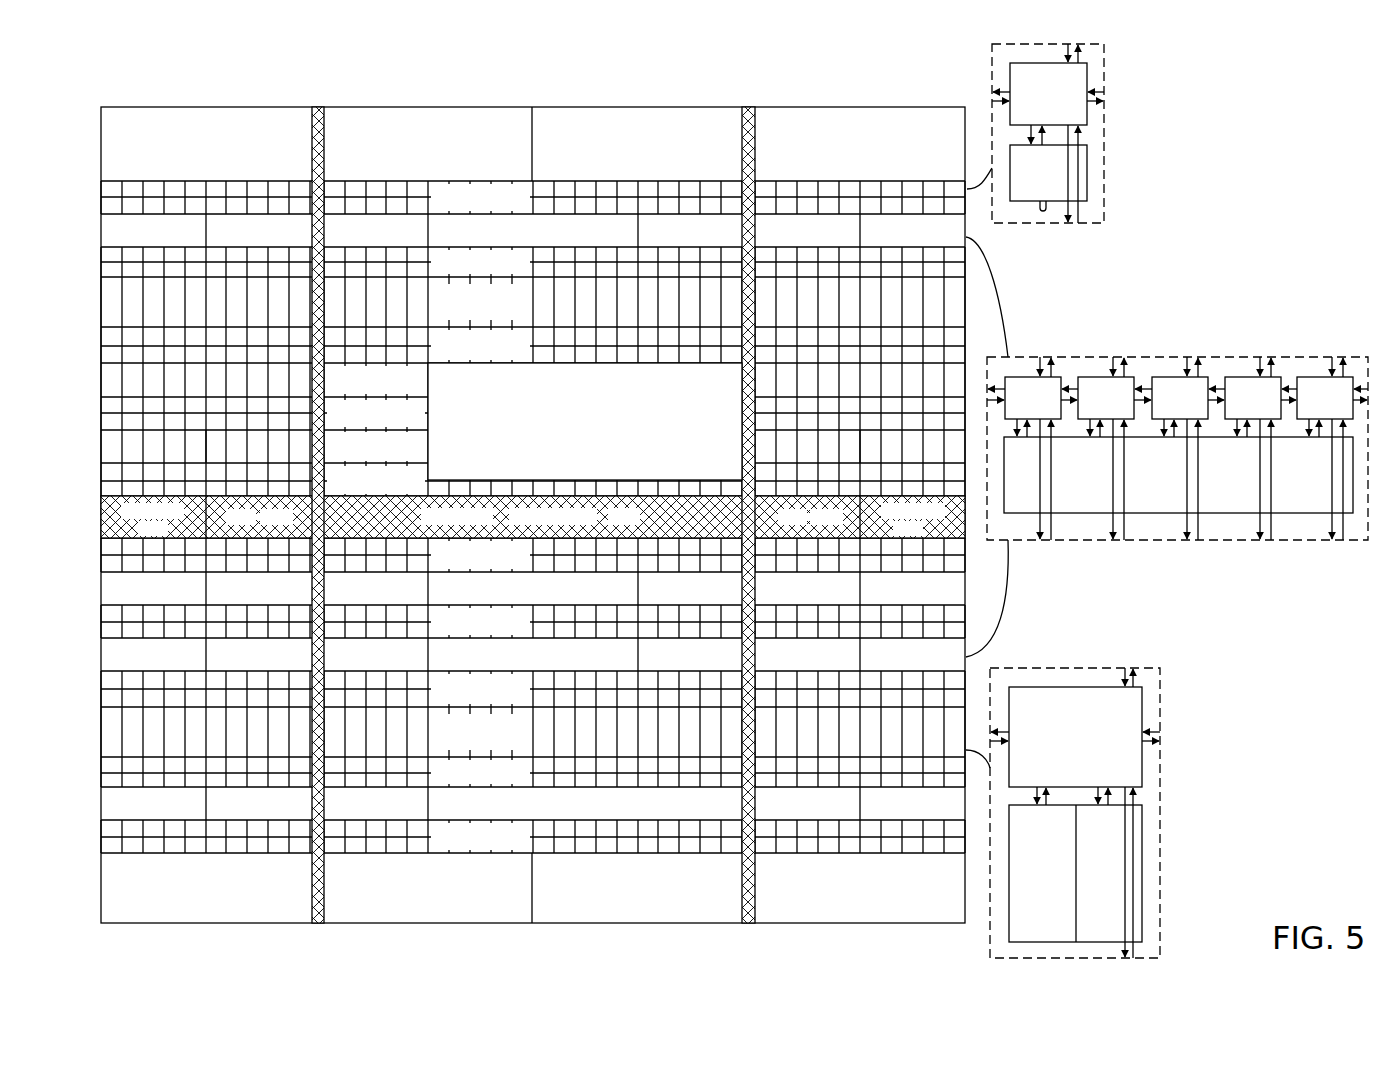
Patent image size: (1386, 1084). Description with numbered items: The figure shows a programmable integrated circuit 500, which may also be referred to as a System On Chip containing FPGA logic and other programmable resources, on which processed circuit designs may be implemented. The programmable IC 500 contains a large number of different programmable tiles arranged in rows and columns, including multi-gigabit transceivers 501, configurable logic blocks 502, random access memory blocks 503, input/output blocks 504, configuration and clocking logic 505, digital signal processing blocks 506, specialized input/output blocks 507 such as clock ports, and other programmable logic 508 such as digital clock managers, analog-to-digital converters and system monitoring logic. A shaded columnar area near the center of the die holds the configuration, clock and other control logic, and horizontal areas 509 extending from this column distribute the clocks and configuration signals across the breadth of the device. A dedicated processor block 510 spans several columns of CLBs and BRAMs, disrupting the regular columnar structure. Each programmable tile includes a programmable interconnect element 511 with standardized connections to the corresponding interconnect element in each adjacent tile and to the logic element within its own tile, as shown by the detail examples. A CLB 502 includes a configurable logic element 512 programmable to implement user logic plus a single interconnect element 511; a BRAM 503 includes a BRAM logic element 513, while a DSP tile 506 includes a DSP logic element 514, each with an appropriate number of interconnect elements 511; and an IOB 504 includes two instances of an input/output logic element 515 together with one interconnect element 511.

The programmable integrated circuit 500 is at (1280, 88).
The multi-gigabit transceivers 501 is at (456, 515).
The configurable logic blocks 502 is at (1104, 163).
The random access memory blocks 503 is at (1298, 357).
The input/output blocks 504 is at (1160, 840).
The configuration and clocking logic 505 is at (533, 517).
The digital signal processing blocks 506 is at (901, 470).
The specialized input/output blocks 507 is at (536, 516).
The other programmable logic 508 is at (533, 519).
The horizontal areas 509 is at (318, 107).
The dedicated processor block 510 is at (585, 421).
The programmable interconnect element 511 is at (1179, 425).
The configurable logic element 512 is at (1048, 173).
The BRAM logic element 513 is at (1178, 475).
The DSP logic element 514 is at (1300, 474).
The input/output logic element 515 is at (1075, 873).